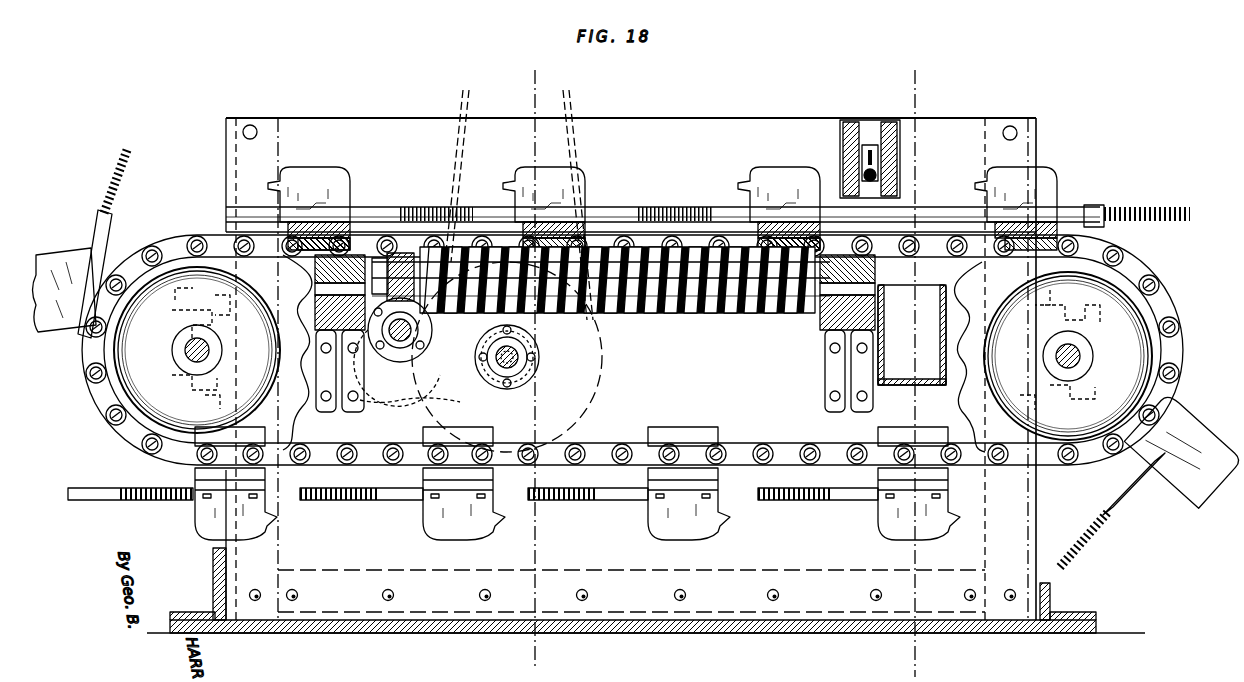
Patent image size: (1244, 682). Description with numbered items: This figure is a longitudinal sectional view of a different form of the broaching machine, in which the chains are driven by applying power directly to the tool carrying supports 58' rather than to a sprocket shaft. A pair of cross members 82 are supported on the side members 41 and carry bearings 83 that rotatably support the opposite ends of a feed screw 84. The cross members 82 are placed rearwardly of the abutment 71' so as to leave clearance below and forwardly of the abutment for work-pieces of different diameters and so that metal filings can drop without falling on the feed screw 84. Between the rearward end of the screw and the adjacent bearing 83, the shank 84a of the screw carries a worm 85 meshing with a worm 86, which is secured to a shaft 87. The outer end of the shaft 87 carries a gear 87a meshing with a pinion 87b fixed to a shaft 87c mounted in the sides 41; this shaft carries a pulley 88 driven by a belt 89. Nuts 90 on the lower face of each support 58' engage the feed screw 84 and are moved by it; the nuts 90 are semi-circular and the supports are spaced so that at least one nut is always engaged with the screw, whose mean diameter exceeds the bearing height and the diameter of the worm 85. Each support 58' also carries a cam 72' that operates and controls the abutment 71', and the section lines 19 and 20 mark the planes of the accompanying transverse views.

The section line 19 is at (535, 70).
The section line 20 is at (915, 70).
The side member 41 is at (681, 367).
The support 58' is at (669, 208).
The abutment 71' is at (897, 162).
The cam 72' is at (577, 353).
The cross member 82 is at (316, 322).
The bearing 83 is at (316, 288).
The feed screw 84 is at (662, 312).
The shank 84a is at (372, 242).
The worm 85 is at (400, 252).
The worm 86 is at (400, 362).
The shaft 87 is at (475, 350).
The gear 87a is at (402, 406).
The pinion 87b is at (530, 385).
The shaft 87c is at (538, 352).
The pulley 88 is at (588, 392).
The belt 89 is at (568, 98).
The nut 90 is at (362, 240).